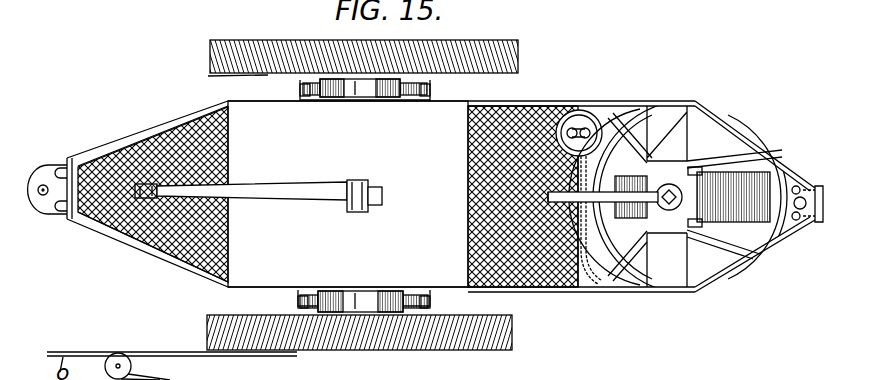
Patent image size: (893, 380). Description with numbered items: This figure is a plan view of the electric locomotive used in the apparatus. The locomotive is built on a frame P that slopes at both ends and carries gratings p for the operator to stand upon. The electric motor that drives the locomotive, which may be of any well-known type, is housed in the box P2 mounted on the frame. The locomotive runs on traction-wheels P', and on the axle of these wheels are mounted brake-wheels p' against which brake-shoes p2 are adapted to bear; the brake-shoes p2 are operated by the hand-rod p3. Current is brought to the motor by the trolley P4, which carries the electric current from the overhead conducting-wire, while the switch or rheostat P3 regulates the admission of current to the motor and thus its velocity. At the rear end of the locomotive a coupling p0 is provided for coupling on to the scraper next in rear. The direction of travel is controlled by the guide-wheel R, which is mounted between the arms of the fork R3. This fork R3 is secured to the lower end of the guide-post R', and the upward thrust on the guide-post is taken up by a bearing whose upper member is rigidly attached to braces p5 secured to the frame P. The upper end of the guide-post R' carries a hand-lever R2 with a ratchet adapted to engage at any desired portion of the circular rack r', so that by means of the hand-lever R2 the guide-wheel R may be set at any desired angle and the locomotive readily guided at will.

The frame P is at (445, 180).
The traction-wheels P' is at (367, 195).
The box P2 is at (348, 194).
The switch or rheostat P3 is at (575, 130).
The trolley P4 is at (286, 172).
The gratings p is at (392, 281).
The coupling p0 is at (43, 196).
The brake-wheels p' is at (364, 195).
The brake-shoes p2 is at (310, 90).
The hand-rod p3 is at (573, 280).
The braces p5 is at (690, 110).
The guide-wheel R is at (692, 197).
The guide-post R' is at (695, 192).
The hand-lever R2 is at (606, 150).
The fork R3 is at (755, 172).
The circular rack r' is at (604, 197).